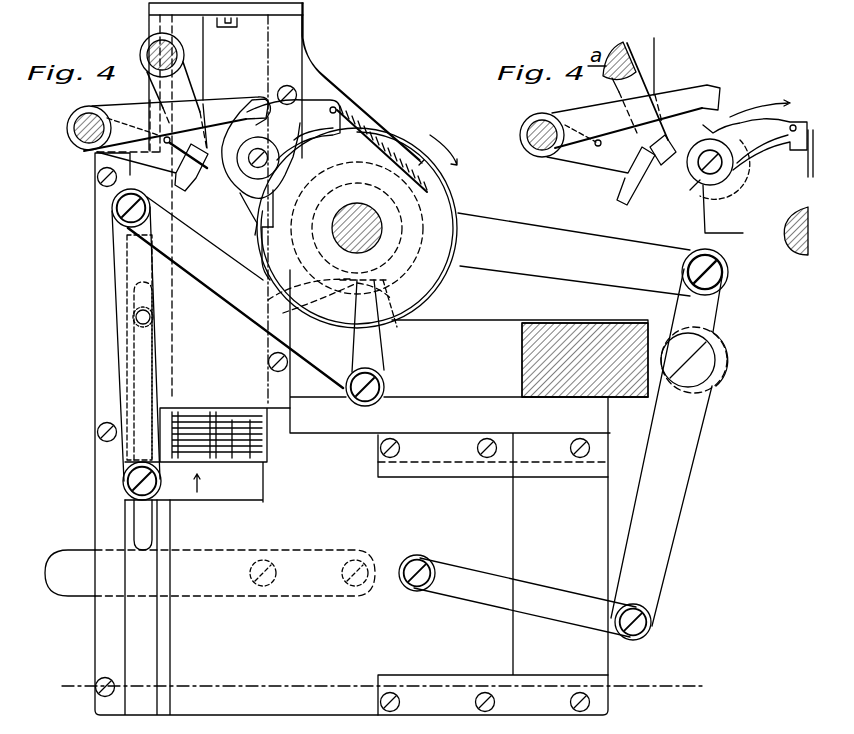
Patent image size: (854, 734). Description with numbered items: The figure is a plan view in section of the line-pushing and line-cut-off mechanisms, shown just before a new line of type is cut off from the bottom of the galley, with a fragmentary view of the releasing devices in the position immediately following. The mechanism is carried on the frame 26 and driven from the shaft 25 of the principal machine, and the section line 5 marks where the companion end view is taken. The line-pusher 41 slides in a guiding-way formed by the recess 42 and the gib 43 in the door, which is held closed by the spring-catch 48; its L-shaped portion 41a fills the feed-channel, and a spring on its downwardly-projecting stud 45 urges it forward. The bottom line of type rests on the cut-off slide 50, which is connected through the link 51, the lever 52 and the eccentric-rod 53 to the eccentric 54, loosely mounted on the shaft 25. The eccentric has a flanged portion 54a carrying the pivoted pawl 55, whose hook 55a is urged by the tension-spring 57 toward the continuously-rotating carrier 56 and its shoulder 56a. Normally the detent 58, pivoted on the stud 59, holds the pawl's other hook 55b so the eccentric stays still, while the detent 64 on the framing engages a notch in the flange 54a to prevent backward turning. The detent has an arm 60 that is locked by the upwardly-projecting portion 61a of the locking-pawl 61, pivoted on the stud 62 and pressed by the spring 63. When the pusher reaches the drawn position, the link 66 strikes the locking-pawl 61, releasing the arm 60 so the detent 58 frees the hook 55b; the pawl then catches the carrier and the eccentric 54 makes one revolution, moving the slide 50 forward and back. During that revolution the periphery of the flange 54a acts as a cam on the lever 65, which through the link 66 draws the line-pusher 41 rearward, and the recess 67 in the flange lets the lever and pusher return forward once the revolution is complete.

In FIG. 4, the section line 5 5 is at (383, 682).
In FIG. 4, the shaft 25 is at (374, 232).
In FIG. 4, the frame 26 is at (520, 358).
In FIG. 4, the line-pusher 41 is at (157, 295).
In FIG. 4, the L-shaped portion of the pusher 41a is at (207, 455).
In FIG. 4, the recess 42 is at (141, 649).
In FIG. 4, the gib 43 is at (100, 490).
In FIG. 4, the stud 45 is at (147, 318).
In FIG. 4, the spring-catch 48 is at (210, 573).
In FIG. 4, the cut-off slide 50 is at (372, 401).
In FIG. 4, the link 51 is at (517, 596).
In FIG. 4, the lever 52 is at (669, 454).
In FIG. 4, the eccentric-rod 53 is at (593, 254).
In FIG. 4, the eccentric 54 is at (413, 263).
In FIG. 4, the flanged portion of the eccentric 54a is at (254, 187).
In FIG. 4, the pawl 55 is at (308, 118).
In FIG. 4A, the pawl 55 is at (731, 136).
In FIG. 4, the hook of the pawl 55a is at (337, 136).
In FIG. 4A, the hook of the pawl 55a is at (795, 146).
In FIG. 4, the hook of the pawl 55b is at (255, 124).
In FIG. 4A, the hook of the pawl 55b is at (700, 135).
In FIG. 4, the carrier 56 is at (293, 121).
In FIG. 4A, the carrier 56 is at (749, 217).
In FIG. 4, the shoulder 56a is at (272, 232).
In FIG. 4, the tension-spring 57 is at (393, 155).
In FIG. 4, the detent 58 is at (176, 124).
In FIG. 4A, the detent 58 is at (636, 116).
In FIG. 4, the stud 59 is at (70, 143).
In FIG. 4A, the stud 59 is at (521, 131).
In FIG. 4, the arm 60 is at (188, 190).
In FIG. 4A, the arm 60 is at (596, 158).
In FIG. 4, the locking-pawl 61 is at (180, 85).
In FIG. 4A, the locking-pawl 61 is at (627, 92).
In FIG. 4, the upwardly-projecting portion of the locking-pawl 61a is at (210, 160).
In FIG. 4A, the upwardly-projecting portion of the locking-pawl 61a is at (678, 138).
In FIG. 4, the stud 62 is at (147, 42).
In FIG. 4A, the stud 62 is at (636, 54).
In FIG. 4, the spring 63 is at (206, 50).
In FIG. 4A, the spring 63 is at (658, 66).
In FIG. 4, the detent 64 is at (326, 70).
In FIG. 4, the lever 65 is at (256, 301).
In FIG. 4, the link 66 is at (117, 258).
In FIG. 4, the recess 67 is at (385, 312).